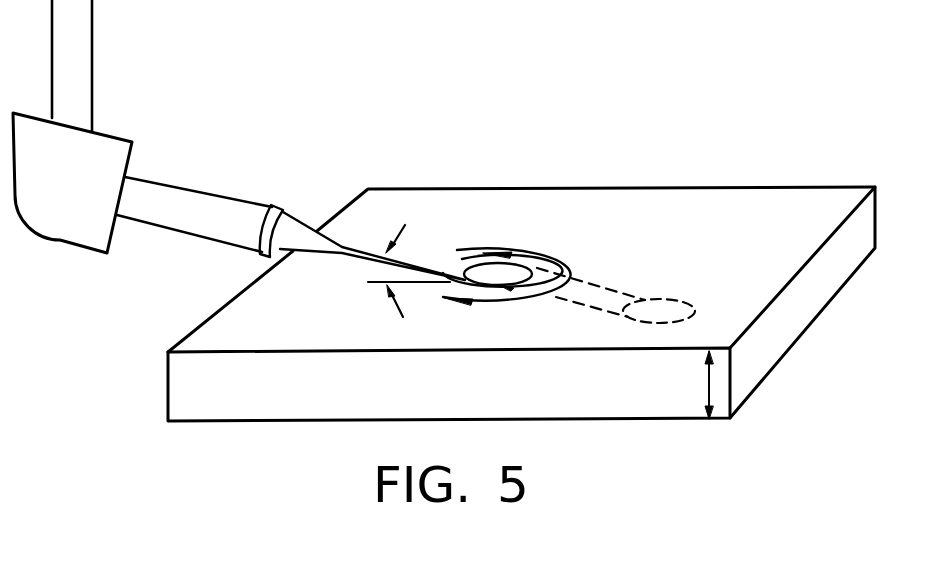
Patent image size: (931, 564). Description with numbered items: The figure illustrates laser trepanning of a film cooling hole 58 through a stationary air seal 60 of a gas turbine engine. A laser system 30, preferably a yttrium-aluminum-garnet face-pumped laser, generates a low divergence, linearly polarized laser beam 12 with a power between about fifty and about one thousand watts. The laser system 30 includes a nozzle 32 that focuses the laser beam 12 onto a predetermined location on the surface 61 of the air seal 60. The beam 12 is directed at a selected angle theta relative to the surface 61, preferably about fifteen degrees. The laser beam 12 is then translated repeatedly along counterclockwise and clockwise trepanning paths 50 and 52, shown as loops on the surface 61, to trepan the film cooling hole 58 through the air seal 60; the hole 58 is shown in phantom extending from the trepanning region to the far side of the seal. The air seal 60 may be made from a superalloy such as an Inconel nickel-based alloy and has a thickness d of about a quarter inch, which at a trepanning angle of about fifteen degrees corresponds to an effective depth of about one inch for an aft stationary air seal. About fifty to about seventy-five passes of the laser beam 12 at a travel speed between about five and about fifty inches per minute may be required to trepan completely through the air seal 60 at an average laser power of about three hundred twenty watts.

The laser beam 12 is at (358, 246).
The laser system 30 is at (92, 57).
The nozzle 32 is at (192, 188).
The counterclockwise trepanning path 50 is at (539, 266).
The clockwise trepanning path 52 is at (499, 303).
The film cooling hole 58 is at (632, 293).
The stationary air seal 60 is at (608, 187).
The surface 61 is at (223, 330).
The thickness d is at (709, 382).